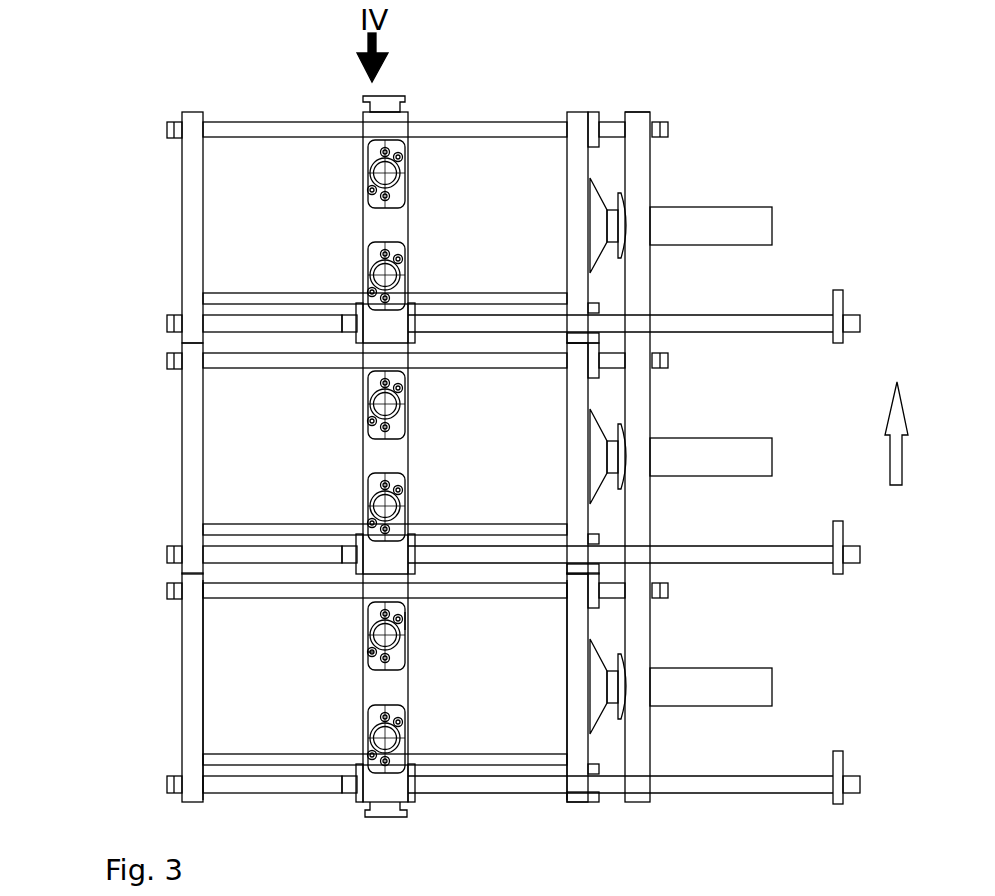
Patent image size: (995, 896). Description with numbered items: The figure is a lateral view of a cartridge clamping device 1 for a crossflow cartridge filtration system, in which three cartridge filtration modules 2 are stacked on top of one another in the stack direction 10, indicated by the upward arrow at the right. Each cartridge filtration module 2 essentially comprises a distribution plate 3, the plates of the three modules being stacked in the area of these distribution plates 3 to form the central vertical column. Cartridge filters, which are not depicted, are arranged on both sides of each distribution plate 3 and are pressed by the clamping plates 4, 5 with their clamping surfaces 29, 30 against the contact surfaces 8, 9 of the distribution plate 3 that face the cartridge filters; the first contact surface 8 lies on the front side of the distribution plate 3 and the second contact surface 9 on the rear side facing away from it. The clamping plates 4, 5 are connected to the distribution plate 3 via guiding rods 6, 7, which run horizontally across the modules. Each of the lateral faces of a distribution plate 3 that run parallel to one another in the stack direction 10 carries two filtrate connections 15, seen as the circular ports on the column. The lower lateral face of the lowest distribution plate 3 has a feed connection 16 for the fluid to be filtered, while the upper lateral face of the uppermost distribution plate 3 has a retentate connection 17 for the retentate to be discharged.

The cartridge clamping device 1 is at (140, 76).
The cartridge filtration module 2 is at (133, 232).
The distribution plate 3 is at (333, 219).
The clamping plate 4 is at (578, 168).
The clamping plate 5 is at (192, 187).
The guiding rod 6 is at (283, 130).
The guiding rod 7 is at (292, 297).
The first contact surface 8 is at (412, 622).
The second contact surface 9 is at (363, 649).
The stack direction 10 is at (897, 440).
The filtrate connection 15 is at (383, 173).
The feed connection 16 is at (387, 817).
The retentate connection 17 is at (392, 97).
The clamping surface 29 is at (205, 692).
The clamping surface 30 is at (567, 693).